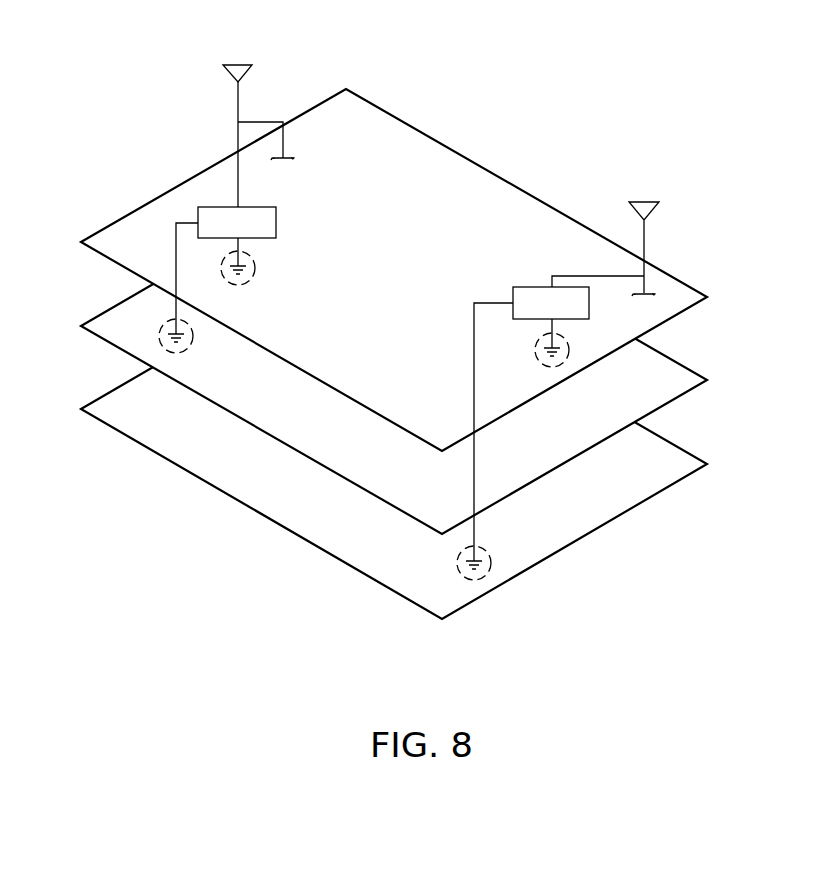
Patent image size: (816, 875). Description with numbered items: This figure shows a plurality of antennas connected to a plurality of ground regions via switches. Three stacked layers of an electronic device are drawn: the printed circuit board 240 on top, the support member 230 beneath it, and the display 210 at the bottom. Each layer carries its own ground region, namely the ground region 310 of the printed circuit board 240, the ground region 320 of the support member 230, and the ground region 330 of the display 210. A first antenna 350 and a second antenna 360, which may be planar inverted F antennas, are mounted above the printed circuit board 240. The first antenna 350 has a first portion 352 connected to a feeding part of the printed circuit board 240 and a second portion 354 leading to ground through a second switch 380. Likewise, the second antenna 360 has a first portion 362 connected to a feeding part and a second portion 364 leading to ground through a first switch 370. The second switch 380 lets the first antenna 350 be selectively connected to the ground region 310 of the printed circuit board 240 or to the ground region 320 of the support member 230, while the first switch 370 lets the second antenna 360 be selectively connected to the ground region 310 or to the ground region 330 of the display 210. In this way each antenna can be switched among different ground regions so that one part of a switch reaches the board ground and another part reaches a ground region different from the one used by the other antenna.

The display 210 is at (102, 395).
The support member 230 is at (102, 312).
The printed circuit board 240 is at (121, 216).
The ground region of the printed circuit board 310 is at (255, 279).
The ground region of the support member 320 is at (192, 347).
The ground region of the display 330 is at (490, 574).
The first antenna 350 is at (238, 63).
The first portion of the first antenna 352 is at (283, 121).
The second portion of the first antenna 354 is at (237, 140).
The second antenna 360 is at (644, 201).
The first portion of the second antenna 362 is at (652, 284).
The second portion of the second antenna 364 is at (588, 275).
The first switch 370 is at (525, 286).
The second switch 380 is at (277, 222).